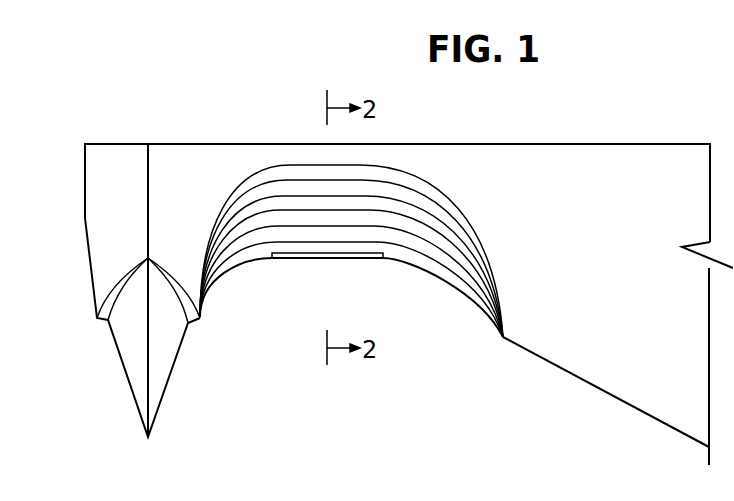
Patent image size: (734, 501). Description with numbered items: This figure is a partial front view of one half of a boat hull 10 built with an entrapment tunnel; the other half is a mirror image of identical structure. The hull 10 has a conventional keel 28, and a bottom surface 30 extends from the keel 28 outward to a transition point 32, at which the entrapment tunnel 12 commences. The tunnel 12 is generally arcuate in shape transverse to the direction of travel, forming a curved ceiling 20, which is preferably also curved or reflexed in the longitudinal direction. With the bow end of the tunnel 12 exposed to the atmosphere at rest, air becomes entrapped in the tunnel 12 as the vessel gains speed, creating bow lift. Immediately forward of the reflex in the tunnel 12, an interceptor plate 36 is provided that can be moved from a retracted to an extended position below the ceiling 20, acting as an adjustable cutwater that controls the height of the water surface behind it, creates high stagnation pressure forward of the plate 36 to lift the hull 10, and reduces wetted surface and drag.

The boat hull 10 is at (572, 114).
The entrapment tunnel 12 is at (457, 198).
The curved ceiling 20 is at (380, 190).
The keel 28 is at (703, 450).
The bottom surface 30 is at (548, 366).
The transition point 32 is at (498, 340).
The interceptor plate 36 is at (367, 258).